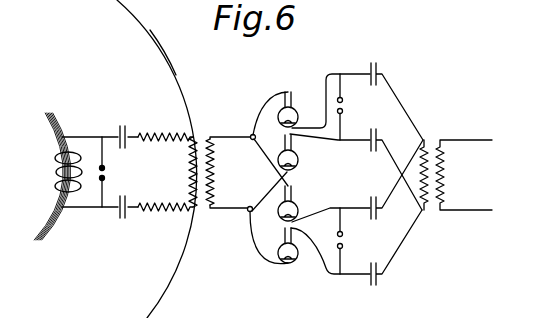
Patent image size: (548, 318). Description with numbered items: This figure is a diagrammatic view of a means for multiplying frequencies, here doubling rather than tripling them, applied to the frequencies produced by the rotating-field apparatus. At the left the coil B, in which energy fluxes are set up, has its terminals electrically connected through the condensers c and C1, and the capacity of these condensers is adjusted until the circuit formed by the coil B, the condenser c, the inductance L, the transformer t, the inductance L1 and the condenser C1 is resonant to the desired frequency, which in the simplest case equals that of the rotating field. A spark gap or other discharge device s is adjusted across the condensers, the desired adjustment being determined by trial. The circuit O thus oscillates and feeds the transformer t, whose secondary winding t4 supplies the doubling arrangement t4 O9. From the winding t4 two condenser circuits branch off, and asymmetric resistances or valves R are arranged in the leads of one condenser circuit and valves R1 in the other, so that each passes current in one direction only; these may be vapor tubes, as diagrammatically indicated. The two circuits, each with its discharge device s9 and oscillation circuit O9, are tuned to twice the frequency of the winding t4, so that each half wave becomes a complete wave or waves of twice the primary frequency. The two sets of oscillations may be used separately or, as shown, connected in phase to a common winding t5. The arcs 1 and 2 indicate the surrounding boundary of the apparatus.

The inner boundary line of receiving station 1 is at (178, 267).
The outer boundary line 2 is at (170, 65).
The coil B is at (52, 176).
The condenser c is at (118, 125).
The inductance L is at (165, 126).
The discharge device s is at (108, 172).
The oscillation circuit O is at (108, 172).
The transformer t is at (183, 172).
The transformer winding t4 is at (228, 172).
The condenser C1 is at (120, 220).
The inductance L1 is at (165, 222).
The asymmetric resistance or valve R is at (311, 142).
The asymmetric resistance or valve R1 is at (310, 211).
The discharge device s9 is at (353, 174).
The condenser circuit O9 is at (397, 174).
The common winding t5 is at (448, 175).